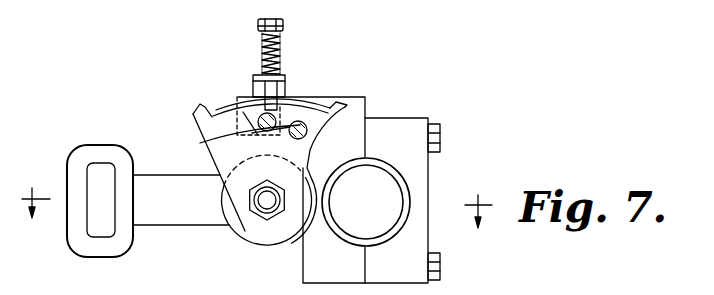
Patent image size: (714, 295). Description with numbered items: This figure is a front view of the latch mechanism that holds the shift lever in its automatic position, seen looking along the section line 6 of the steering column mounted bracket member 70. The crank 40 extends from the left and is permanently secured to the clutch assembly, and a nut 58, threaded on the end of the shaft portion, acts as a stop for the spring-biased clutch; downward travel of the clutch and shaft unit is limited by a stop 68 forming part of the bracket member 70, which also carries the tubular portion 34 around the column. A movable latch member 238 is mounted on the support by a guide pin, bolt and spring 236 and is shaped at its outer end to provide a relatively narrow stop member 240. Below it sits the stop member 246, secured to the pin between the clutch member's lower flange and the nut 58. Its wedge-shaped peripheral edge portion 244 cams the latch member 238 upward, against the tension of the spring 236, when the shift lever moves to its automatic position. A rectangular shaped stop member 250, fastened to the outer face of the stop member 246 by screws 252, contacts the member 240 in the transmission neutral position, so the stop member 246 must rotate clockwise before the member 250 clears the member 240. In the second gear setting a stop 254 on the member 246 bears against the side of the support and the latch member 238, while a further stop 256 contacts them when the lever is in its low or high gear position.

The section line 6- 6 is at (257, 219).
The tubular member 34 is at (410, 184).
The crank 40 is at (196, 222).
The nut 58 is at (263, 212).
The stop 68 is at (298, 238).
The bracket member 70 is at (415, 122).
The spring 236 is at (281, 34).
The movable latch member 238 is at (258, 77).
The stop member 240 is at (277, 95).
The wedge-shaped peripheral edge portion 244 is at (228, 108).
The stop member 246 is at (200, 124).
The rectangular shaped stop member 250 is at (305, 100).
The screws 252 is at (230, 142).
The stop 254 is at (199, 109).
The stop 256 is at (348, 105).